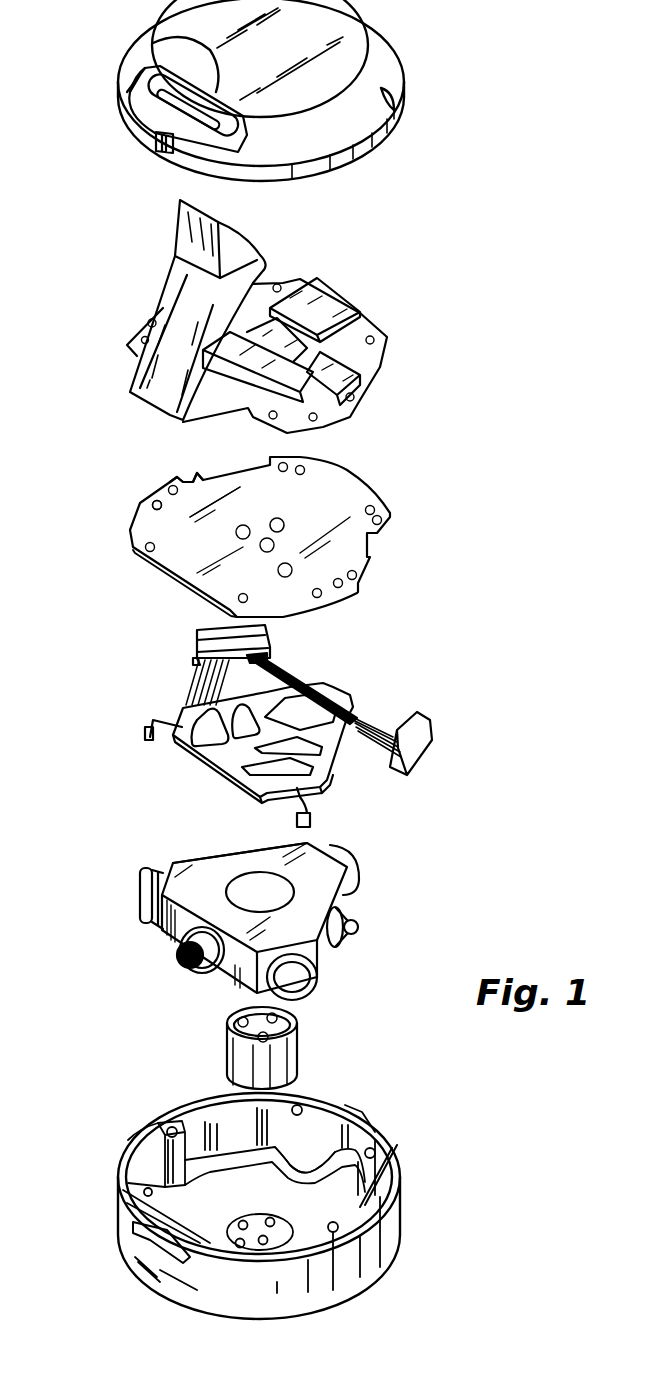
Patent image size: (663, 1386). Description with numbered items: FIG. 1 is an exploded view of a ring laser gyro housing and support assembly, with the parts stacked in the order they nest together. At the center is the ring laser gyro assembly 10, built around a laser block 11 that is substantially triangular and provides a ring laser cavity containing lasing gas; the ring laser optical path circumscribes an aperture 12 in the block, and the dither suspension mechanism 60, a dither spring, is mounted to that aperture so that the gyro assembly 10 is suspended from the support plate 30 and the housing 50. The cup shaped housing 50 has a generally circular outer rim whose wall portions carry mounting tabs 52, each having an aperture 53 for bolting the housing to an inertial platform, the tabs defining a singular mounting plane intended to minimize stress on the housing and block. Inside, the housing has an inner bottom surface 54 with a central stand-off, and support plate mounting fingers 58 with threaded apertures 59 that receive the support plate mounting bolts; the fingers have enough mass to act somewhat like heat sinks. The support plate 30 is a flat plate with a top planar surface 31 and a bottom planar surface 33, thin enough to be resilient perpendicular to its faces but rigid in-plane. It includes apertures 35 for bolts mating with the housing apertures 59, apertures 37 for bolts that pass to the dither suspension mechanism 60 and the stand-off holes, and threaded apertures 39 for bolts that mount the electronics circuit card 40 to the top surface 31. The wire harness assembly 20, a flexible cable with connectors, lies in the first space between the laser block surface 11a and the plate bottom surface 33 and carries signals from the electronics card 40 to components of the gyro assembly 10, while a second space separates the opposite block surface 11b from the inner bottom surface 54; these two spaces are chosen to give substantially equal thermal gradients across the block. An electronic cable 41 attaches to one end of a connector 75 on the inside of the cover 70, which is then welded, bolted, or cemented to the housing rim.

The ring laser gyro assembly 10 is at (273, 899).
The laser block 11 is at (304, 937).
The laser block surface 11a is at (208, 878).
The laser block surface 11b is at (170, 957).
The aperture 12 is at (268, 904).
The wire harness assembly 20 is at (370, 673).
The support plate 30 is at (263, 516).
The top planar surface 31 is at (167, 533).
The bottom planar surface 33 is at (163, 577).
The apertures 35 is at (147, 505).
The apertures 37 is at (277, 522).
The threaded apertures 39 is at (170, 480).
The electronics circuit card 40 is at (390, 287).
The electronic cable 41 is at (197, 295).
The cup shaped housing 50 is at (283, 1199).
The mounting tabs 52 is at (153, 1242).
The aperture 53 is at (397, 1200).
The inner bottom surface 54 is at (262, 1204).
The support plate mounting fingers 58 is at (310, 1137).
The threaded apertures 59 is at (172, 1130).
The dither suspension mechanism 60 is at (320, 1043).
The cover 70 is at (404, 72).
The connector 75 is at (165, 43).